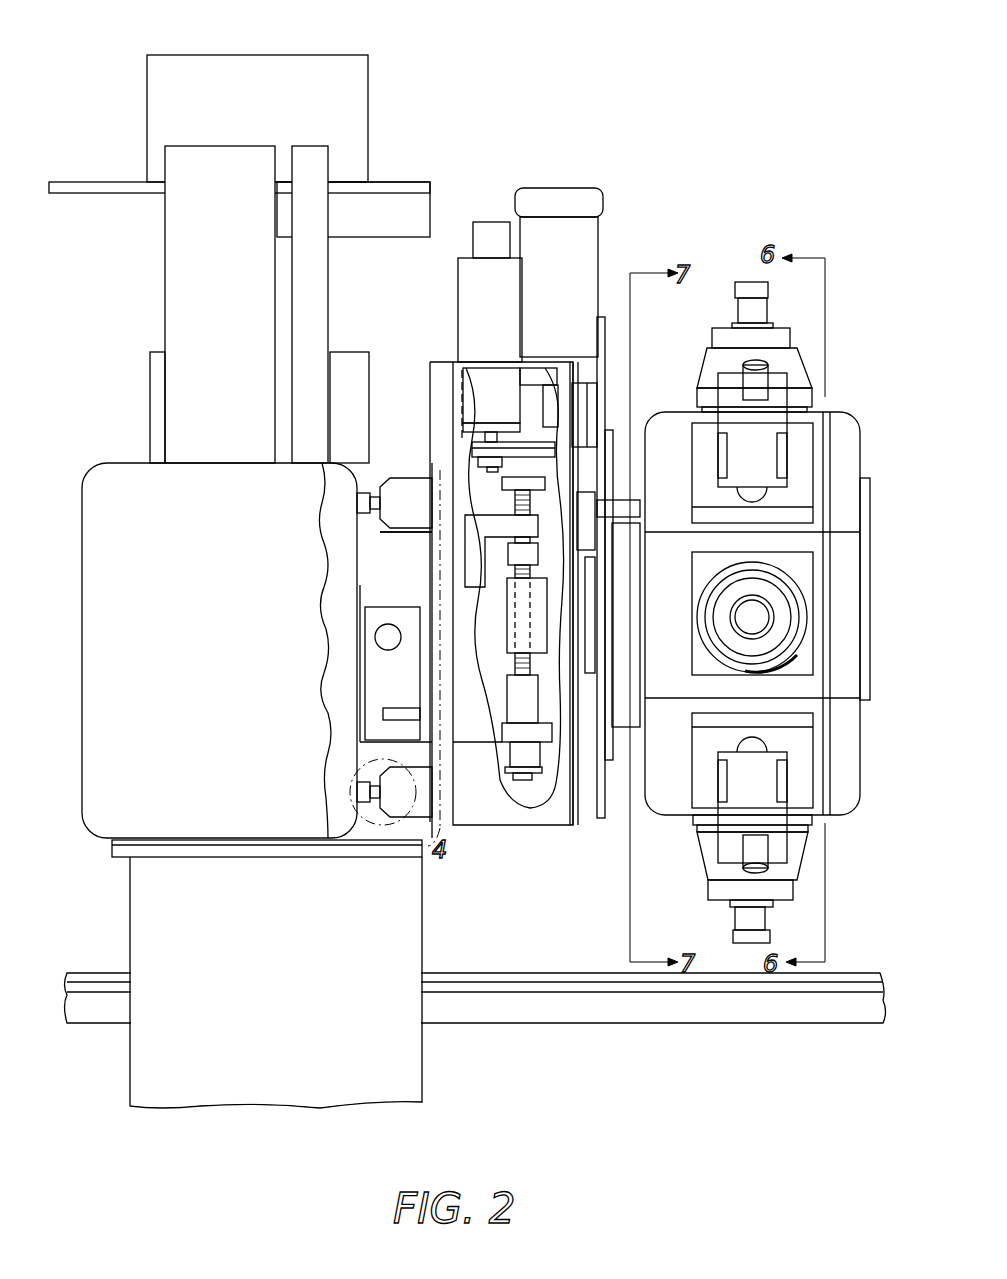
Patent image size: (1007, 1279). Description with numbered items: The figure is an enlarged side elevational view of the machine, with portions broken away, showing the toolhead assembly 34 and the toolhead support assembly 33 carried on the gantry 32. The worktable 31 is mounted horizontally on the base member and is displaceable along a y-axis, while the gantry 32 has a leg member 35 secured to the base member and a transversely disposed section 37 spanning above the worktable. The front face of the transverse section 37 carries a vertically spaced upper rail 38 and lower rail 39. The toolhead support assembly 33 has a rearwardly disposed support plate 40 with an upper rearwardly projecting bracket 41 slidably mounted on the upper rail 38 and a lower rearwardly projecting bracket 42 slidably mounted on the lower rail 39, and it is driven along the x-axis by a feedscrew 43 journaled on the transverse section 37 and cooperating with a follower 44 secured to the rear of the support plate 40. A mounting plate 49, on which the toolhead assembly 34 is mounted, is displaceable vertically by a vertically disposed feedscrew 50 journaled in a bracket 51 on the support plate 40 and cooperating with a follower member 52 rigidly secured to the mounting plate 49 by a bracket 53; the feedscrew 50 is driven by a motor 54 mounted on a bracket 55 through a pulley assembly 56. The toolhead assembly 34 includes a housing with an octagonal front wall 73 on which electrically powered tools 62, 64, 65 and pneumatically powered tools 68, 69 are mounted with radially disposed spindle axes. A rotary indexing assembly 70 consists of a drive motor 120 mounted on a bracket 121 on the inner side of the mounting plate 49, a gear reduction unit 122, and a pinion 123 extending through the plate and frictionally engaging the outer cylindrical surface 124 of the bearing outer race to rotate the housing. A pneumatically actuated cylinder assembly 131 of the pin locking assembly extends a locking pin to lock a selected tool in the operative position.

The worktable 31 is at (778, 1030).
The gantry 32 is at (95, 472).
The toolhead support assembly 33 is at (446, 352).
The toolhead assembly 34 is at (866, 800).
The leg member 35 is at (422, 1078).
The transversely disposed section 37 is at (82, 715).
The upper rail 38 is at (357, 502).
The lower rail 39 is at (362, 792).
The support plate 40 is at (430, 586).
The upper rearwardly projecting bracket 41 is at (405, 524).
The lower rearwardly projecting bracket 42 is at (428, 748).
The feedscrew 43 is at (378, 642).
The follower 44 is at (372, 700).
The mounting plate 49 is at (596, 320).
The feedscrew 50 is at (512, 678).
The bracket 51 is at (470, 551).
The follower member 52 is at (512, 756).
The bracket 53 is at (565, 780).
The motor 54 is at (458, 290).
The bracket 55 is at (503, 418).
The pulley assembly 56 is at (475, 450).
The electrically powered tool 62 is at (706, 386).
The electrically powered tool 64 is at (712, 870).
The electrically powered tool 65 is at (805, 650).
The pneumatically powered tool 68 is at (718, 851).
The pneumatically powered tool 69 is at (718, 390).
The rotary indexing assembly 70 is at (604, 246).
The front wall 73 is at (862, 446).
The drive motor 120 is at (602, 200).
The bracket 121 is at (582, 365).
The gear reduction unit 122 is at (552, 468).
The pinion 123 is at (628, 510).
The outer cylindrical surface 124 is at (620, 577).
The pneumatically actuated cylinder assembly 131 is at (510, 628).